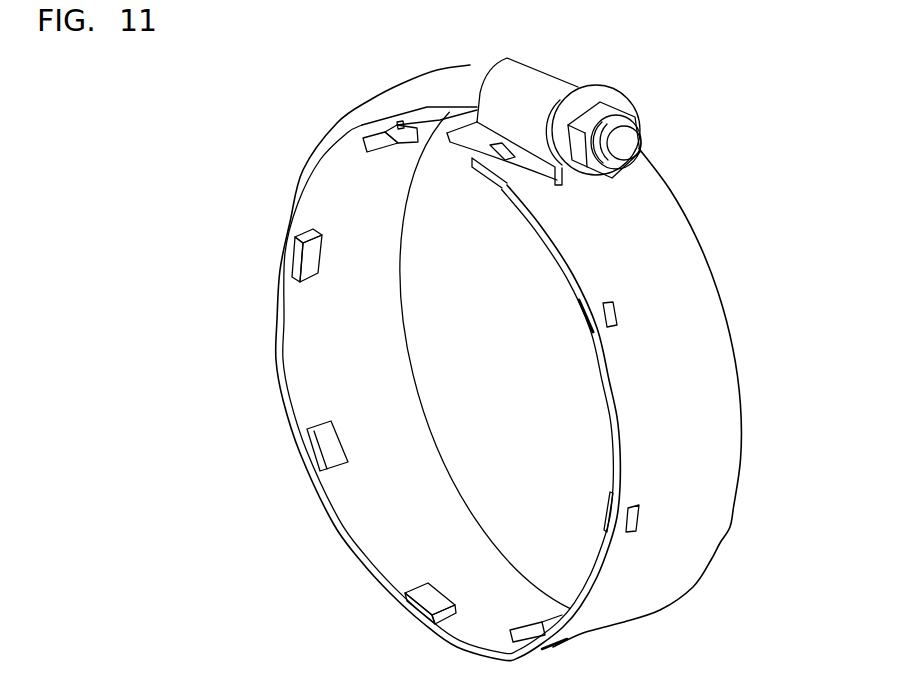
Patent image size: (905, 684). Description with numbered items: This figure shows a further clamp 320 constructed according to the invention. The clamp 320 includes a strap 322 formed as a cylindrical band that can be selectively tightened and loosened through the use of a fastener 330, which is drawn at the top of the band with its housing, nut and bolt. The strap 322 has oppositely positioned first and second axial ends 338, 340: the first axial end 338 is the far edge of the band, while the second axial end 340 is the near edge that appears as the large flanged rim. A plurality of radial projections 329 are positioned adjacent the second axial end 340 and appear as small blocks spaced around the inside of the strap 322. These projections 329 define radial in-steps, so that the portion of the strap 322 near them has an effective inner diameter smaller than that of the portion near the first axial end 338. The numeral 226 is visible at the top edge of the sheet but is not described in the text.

The bolt and nut fastener 226 is at (630, 89).
The clamp 320 is at (702, 197).
The strap 322 is at (737, 319).
The radial projections 329 is at (303, 263).
The fastener 330 is at (470, 61).
The first axial end 338 is at (704, 256).
The second axial end 340 is at (333, 530).